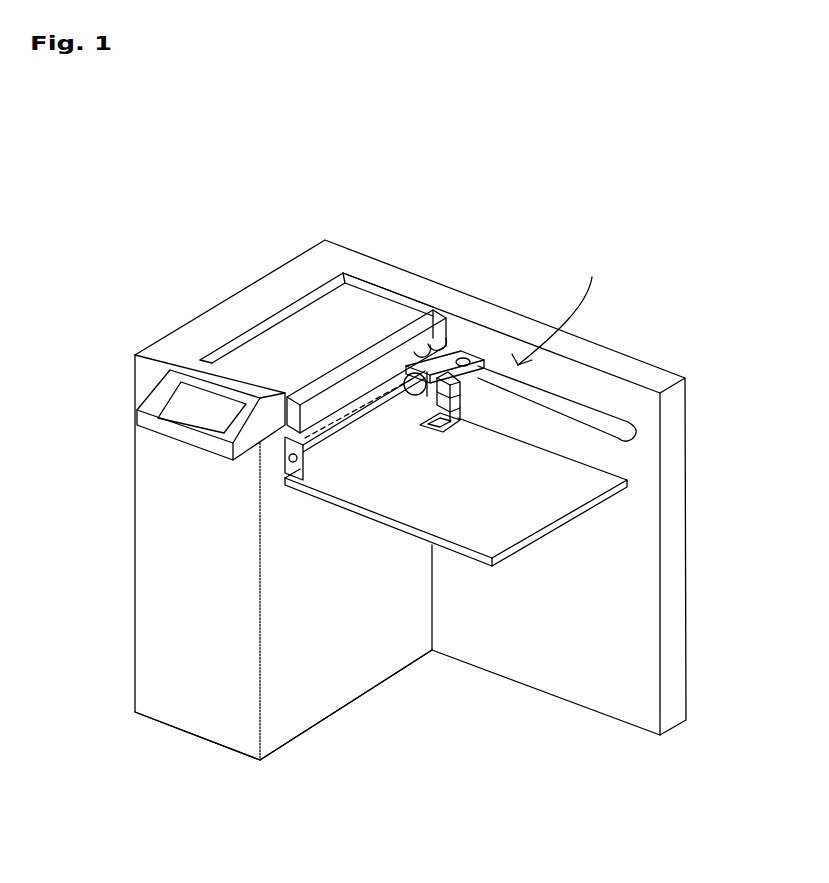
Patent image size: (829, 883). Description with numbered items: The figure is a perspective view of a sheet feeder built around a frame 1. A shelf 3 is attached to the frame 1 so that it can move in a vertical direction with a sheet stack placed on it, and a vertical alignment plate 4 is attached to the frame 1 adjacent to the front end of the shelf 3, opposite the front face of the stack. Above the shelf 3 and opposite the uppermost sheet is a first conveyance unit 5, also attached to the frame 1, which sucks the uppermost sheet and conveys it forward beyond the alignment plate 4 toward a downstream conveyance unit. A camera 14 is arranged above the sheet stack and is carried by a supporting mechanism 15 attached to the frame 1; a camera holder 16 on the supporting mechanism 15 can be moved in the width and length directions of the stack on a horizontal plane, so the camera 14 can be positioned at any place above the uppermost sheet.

The frame 1 is at (440, 295).
The shelf 3 is at (542, 512).
The vertical alignment plate 4 is at (330, 680).
The first conveyance unit 5 is at (350, 422).
The camera 14 is at (441, 383).
The supporting mechanism 15 is at (560, 303).
The camera holder 16 is at (468, 410).